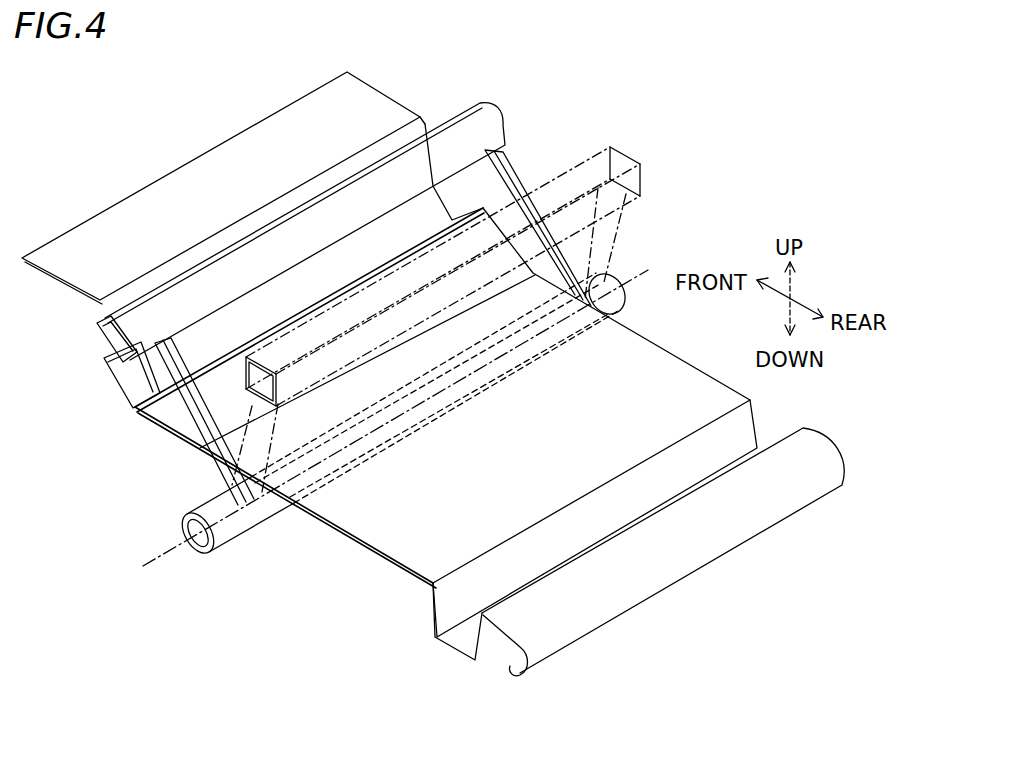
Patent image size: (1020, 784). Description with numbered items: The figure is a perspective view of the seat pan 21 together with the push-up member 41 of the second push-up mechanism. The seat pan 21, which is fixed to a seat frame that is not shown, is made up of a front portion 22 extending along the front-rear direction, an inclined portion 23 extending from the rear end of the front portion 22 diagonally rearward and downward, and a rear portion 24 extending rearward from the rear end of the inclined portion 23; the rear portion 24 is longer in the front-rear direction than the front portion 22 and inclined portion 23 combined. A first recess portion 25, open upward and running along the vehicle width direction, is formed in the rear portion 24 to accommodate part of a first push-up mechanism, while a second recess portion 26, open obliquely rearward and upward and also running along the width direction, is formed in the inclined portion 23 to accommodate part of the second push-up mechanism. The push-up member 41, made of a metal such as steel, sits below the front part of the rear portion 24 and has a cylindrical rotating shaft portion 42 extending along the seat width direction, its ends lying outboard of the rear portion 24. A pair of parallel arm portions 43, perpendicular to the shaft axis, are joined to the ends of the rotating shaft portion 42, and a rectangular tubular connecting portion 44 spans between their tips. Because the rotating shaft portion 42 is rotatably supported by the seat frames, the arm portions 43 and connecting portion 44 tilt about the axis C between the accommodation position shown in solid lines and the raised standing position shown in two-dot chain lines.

The seat pan 21 is at (247, 185).
The front portion 22 is at (366, 91).
The inclined portion 23 is at (427, 123).
The rear portion 24 is at (657, 352).
The first recess portion 25 is at (463, 636).
The second recess portion 26 is at (128, 383).
The push-up member 41 is at (517, 120).
The rotating shaft portion 42 is at (228, 528).
The arm portion 43 is at (503, 166).
The connecting portion 44 is at (99, 341).
The axis C is at (172, 553).